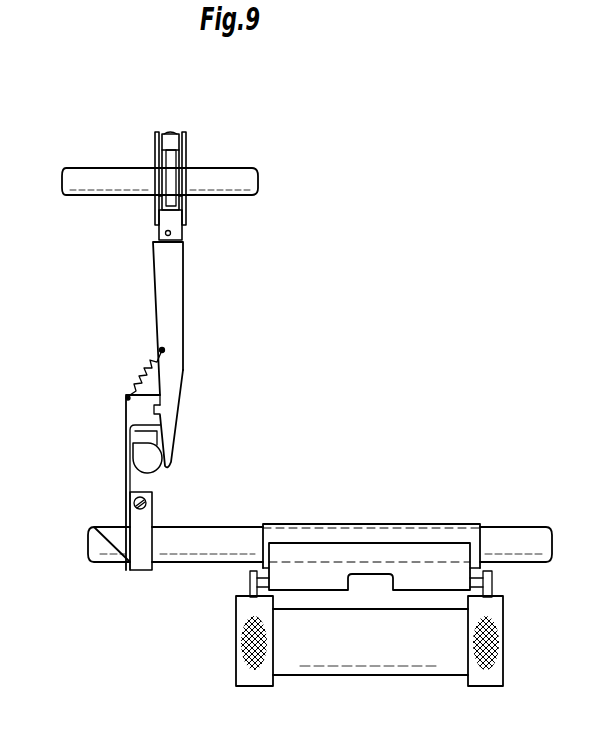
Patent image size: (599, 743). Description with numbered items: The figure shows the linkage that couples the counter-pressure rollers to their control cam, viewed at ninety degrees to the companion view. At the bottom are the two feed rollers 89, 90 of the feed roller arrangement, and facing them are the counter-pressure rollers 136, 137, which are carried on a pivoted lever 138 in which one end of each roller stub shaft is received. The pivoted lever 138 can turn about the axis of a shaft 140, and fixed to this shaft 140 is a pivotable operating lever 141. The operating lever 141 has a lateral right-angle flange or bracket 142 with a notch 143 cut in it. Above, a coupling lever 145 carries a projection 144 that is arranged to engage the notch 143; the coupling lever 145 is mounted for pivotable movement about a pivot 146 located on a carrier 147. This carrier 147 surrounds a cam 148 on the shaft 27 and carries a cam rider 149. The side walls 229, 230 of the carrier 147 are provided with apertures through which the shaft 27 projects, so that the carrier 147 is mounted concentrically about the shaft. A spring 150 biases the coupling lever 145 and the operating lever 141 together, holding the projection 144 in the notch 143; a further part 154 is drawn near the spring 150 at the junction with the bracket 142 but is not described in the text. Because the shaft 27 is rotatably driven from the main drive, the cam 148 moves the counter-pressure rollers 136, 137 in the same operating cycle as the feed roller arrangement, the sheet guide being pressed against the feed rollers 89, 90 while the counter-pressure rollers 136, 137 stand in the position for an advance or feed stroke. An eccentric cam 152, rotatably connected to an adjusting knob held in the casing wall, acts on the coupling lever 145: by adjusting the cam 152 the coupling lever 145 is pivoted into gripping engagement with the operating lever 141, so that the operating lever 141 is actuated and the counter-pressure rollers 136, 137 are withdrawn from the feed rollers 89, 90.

The shaft 27 is at (86, 170).
The cam rider 149 is at (168, 138).
The side wall of the carrier 229 is at (173, 186).
The cam 148 is at (184, 168).
The side wall of the carrier 230 is at (157, 196).
The carrier 147 is at (182, 207).
The pivot 146 is at (172, 236).
The spring 150 is at (148, 374).
The pin 154 is at (158, 396).
The bracket 142 is at (128, 413).
The notch 143 is at (160, 409).
The projection 144 is at (162, 413).
The coupling lever 145 is at (173, 448).
The eccentric cam 152 is at (138, 450).
The shaft 140 is at (102, 535).
The operating lever 141 is at (123, 560).
The pivoted lever 138 is at (425, 563).
The counter-pressure roller 136 is at (253, 577).
The counter-pressure roller 137 is at (488, 578).
The feed roller 89 is at (243, 640).
The feed roller 90 is at (497, 662).